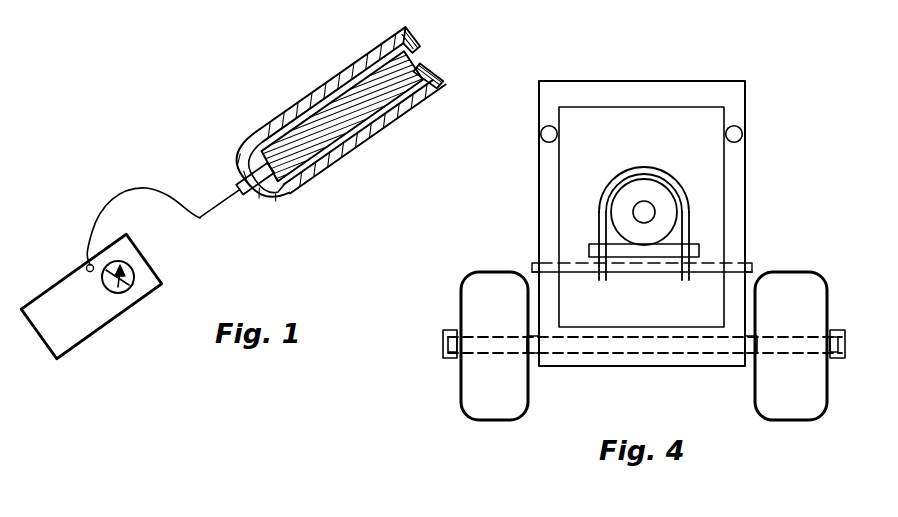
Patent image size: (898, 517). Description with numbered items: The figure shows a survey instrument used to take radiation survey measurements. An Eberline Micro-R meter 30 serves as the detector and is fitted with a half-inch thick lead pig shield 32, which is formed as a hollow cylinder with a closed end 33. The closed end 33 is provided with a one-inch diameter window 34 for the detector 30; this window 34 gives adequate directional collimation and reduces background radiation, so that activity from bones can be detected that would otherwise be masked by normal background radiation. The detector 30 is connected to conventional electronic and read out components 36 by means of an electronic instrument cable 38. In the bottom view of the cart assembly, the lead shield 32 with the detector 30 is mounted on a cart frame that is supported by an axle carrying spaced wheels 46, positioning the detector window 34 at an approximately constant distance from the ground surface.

In FIG. 1, the Micro-R meter 30 is at (332, 127).
In FIG. 1, the lead pig shield 32 is at (300, 102).
In FIG. 4, the lead pig shield 32 is at (676, 177).
In FIG. 1, the closed end 33 is at (432, 75).
In FIG. 1, the window 34 is at (423, 58).
In FIG. 4, the window 34 is at (650, 212).
In FIG. 1, the electronic and read out components 36 is at (132, 310).
In FIG. 1, the electronic instrument cable 38 is at (105, 203).
In FIG. 4, the wheels 46 is at (479, 379).